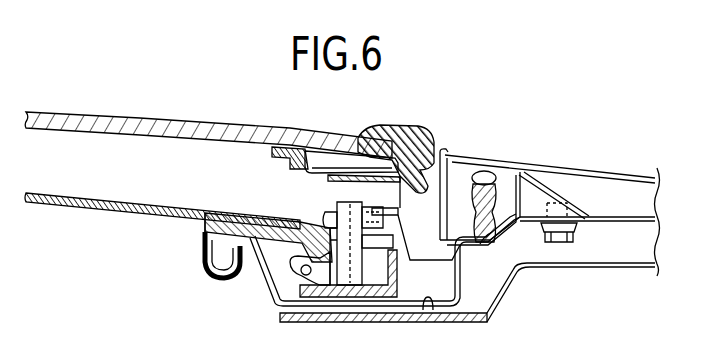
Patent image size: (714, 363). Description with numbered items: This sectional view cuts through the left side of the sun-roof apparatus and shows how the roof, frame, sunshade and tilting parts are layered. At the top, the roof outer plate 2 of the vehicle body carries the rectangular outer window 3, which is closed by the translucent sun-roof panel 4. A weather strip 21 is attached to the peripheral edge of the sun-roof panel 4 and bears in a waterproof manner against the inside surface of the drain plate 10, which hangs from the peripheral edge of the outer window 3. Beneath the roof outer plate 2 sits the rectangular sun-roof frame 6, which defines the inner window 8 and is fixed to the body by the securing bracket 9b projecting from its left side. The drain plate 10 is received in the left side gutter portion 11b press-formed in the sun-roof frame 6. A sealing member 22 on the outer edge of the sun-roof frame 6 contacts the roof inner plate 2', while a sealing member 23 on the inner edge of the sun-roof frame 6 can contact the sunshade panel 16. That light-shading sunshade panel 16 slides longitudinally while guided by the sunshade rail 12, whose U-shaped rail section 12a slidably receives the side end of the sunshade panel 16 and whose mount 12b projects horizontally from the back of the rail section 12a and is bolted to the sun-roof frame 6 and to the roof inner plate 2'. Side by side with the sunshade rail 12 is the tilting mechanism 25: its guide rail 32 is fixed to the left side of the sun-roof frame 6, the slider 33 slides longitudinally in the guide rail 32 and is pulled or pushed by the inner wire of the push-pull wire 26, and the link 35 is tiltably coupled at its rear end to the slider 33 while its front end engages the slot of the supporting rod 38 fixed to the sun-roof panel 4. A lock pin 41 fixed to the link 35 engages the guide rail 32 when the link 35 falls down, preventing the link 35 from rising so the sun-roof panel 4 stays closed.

The roof outer plate 2 is at (552, 207).
The roof inner plate 2' is at (587, 213).
The outer window 3 is at (442, 152).
The sun-roof panel 4 is at (124, 120).
The sun-roof frame 6 is at (491, 227).
The inner window 8 is at (199, 250).
The securing bracket 9b is at (503, 251).
The drain plate 10 is at (438, 200).
The left side gutter portion 11b is at (431, 310).
The sunshade rail 12 is at (266, 209).
The rail section 12a is at (291, 208).
The mount 12b is at (378, 208).
The sunshade panel 16 is at (106, 205).
The weather strip 21 is at (406, 135).
The sealing member 22 is at (517, 157).
The sealing member 23 is at (205, 233).
The tilting mechanism 25 is at (285, 275).
The push-pull wire 26 is at (304, 307).
The guide rail 32 is at (392, 300).
The slider 33 is at (312, 290).
The link 35 is at (352, 288).
The supporting rod 38 is at (357, 206).
The lock pin 41 is at (373, 250).